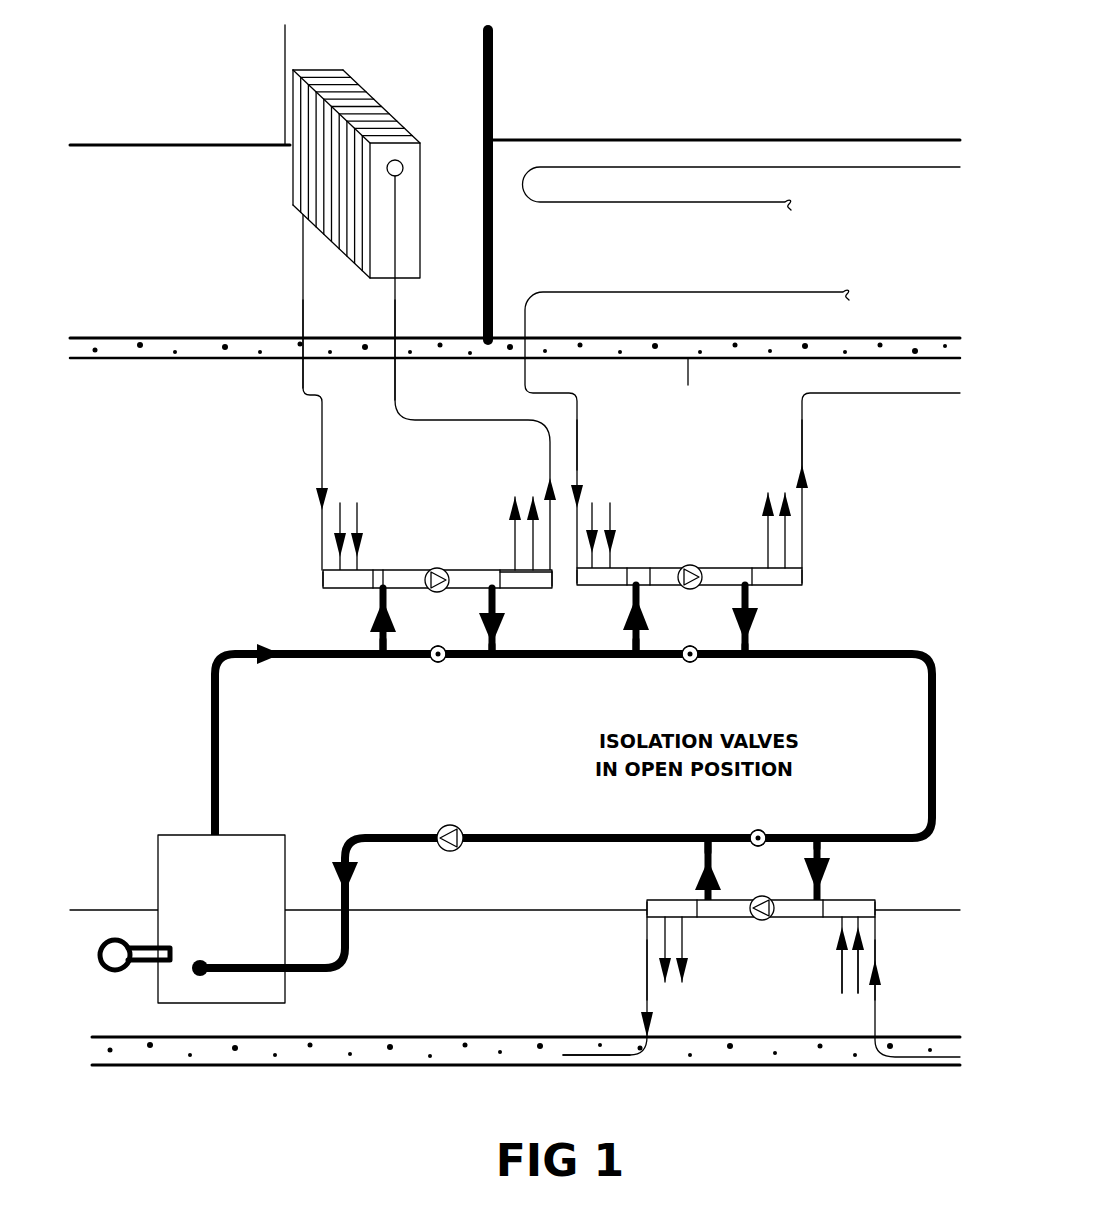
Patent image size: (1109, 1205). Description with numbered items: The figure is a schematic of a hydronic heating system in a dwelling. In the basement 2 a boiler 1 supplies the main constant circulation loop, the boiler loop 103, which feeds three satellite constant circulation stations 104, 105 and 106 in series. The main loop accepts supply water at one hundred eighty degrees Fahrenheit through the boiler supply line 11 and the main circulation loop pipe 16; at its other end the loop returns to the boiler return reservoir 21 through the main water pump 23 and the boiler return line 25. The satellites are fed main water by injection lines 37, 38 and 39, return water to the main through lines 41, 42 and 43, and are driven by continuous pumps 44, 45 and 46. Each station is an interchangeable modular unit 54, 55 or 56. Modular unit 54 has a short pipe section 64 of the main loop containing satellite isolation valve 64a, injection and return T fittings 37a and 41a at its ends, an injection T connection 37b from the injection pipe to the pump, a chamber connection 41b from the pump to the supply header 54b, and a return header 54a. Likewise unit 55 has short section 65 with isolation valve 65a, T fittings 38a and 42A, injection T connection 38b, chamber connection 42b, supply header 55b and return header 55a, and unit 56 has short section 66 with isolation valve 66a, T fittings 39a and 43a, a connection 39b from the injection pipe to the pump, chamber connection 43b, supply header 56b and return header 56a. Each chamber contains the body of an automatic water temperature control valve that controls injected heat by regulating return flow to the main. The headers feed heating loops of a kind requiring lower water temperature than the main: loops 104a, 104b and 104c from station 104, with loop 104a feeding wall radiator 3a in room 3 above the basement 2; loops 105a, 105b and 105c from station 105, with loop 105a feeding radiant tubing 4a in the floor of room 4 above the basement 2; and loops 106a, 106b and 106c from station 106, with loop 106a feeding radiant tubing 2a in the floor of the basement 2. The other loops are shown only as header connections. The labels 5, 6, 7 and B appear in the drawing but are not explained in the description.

The boiler 1 is at (188, 835).
The basement 2 is at (515, 701).
The radiant tubing in basement slab 2a is at (563, 1055).
The room 3 is at (180, 72).
The wall radiator 3a is at (293, 180).
The room 4 is at (726, 70).
The radiant tubing 4a is at (641, 165).
The floor slab 5 is at (688, 385).
The wall 6 is at (493, 95).
The manifold end connection 7 is at (553, 582).
The boiler supply line 11 is at (218, 688).
The main circulation loop pipe 16 is at (940, 748).
The boiler return reservoir 21 is at (200, 960).
The main water pump 23 is at (395, 882).
The boiler return line 25 is at (350, 930).
The satellite injection pipe 37 is at (380, 612).
The injection T fitting 37a is at (383, 665).
The injection T connection 37b is at (383, 570).
The satellite injection pipe 38 is at (632, 640).
The injection T fitting 38a is at (636, 662).
The injection T connection 38b is at (650, 568).
The satellite injection pipe 39 is at (820, 885).
The injection T fitting 39a is at (820, 830).
The return manifold outlet 39b is at (795, 920).
The return pipe 41 is at (498, 590).
The return T fitting 41a is at (492, 662).
The chamber connection 41b is at (485, 570).
The return pipe 42 is at (750, 594).
The return T fitting 42A is at (747, 655).
The chamber connection 42b is at (735, 566).
The return pipe 43 is at (700, 850).
The return T fitting 43a is at (708, 830).
The chamber connection 43b is at (700, 920).
The satellite pump 44 is at (437, 567).
The satellite pump 45 is at (690, 565).
The satellite pump 46 is at (760, 920).
The modular unit 54 is at (417, 488).
The return header 54a is at (323, 580).
The satellite supply header 54b is at (538, 595).
The modular unit 55 is at (708, 462).
The return header 55a is at (573, 588).
The satellite supply header 55b is at (803, 575).
The modular unit 56 is at (755, 962).
The return header 56a is at (878, 907).
The satellite supply header 56b is at (645, 918).
The short pipe section 64 is at (406, 648).
The satellite isolation valve 64a is at (440, 663).
The short pipe section 65 is at (660, 647).
The satellite isolation valve 65a is at (691, 662).
The short pipe section 66 is at (792, 845).
The satellite isolation valve 66a is at (760, 830).
The main circulation loop 103 is at (166, 647).
The satellite station 104 is at (268, 438).
The heating loop 104a is at (320, 553).
The heating loop 104b is at (340, 503).
The heating loop 104c is at (357, 515).
The satellite station 105 is at (868, 492).
The heating loop 105a is at (802, 408).
The heating loop 105b is at (592, 503).
The heating loop 105c is at (610, 520).
The satellite station 106 is at (545, 950).
The heating loop 106a is at (647, 977).
The heating loop 106b is at (858, 980).
The heating loop 106c is at (838, 978).
The burner B is at (135, 955).